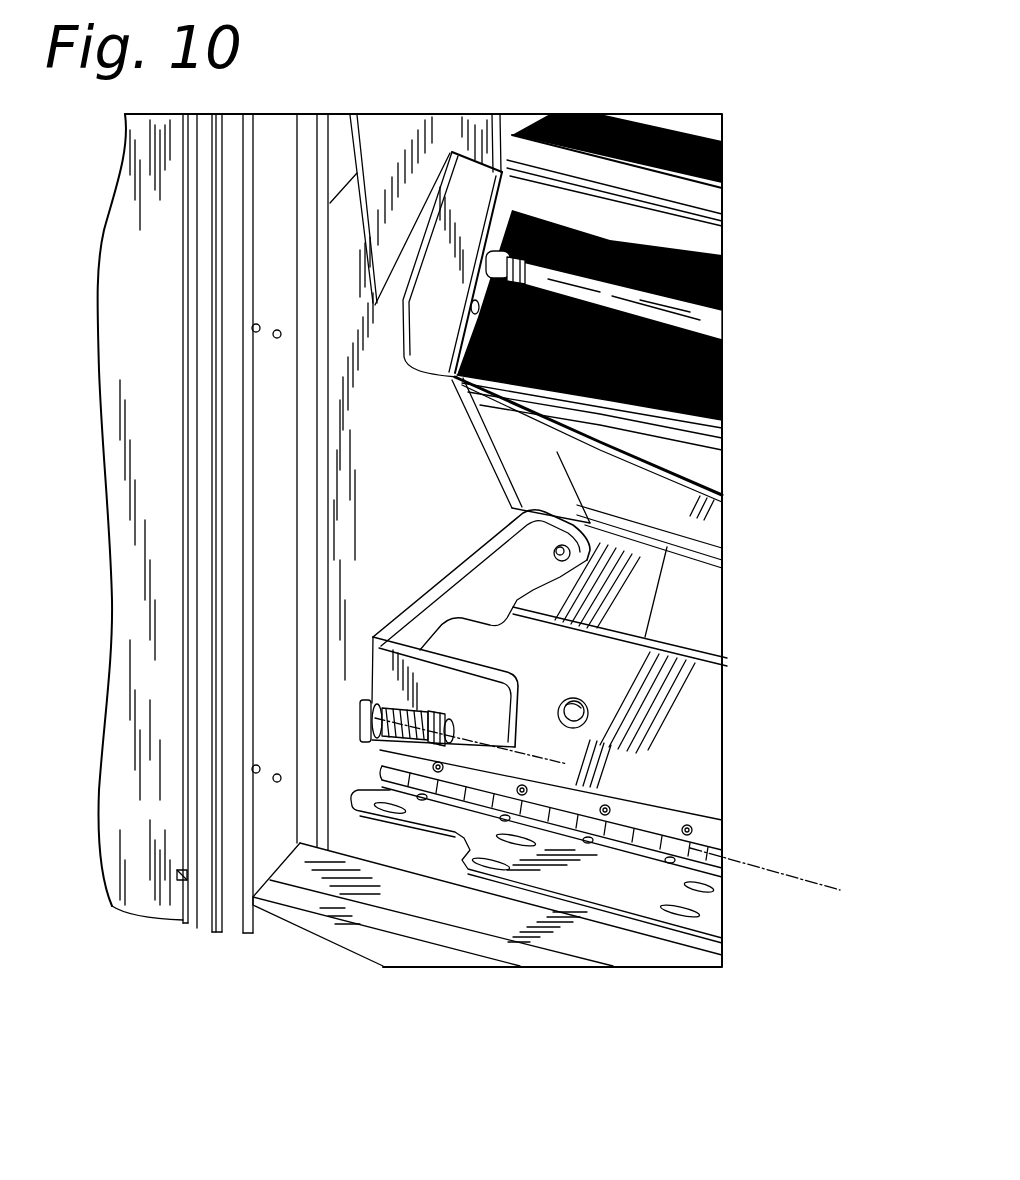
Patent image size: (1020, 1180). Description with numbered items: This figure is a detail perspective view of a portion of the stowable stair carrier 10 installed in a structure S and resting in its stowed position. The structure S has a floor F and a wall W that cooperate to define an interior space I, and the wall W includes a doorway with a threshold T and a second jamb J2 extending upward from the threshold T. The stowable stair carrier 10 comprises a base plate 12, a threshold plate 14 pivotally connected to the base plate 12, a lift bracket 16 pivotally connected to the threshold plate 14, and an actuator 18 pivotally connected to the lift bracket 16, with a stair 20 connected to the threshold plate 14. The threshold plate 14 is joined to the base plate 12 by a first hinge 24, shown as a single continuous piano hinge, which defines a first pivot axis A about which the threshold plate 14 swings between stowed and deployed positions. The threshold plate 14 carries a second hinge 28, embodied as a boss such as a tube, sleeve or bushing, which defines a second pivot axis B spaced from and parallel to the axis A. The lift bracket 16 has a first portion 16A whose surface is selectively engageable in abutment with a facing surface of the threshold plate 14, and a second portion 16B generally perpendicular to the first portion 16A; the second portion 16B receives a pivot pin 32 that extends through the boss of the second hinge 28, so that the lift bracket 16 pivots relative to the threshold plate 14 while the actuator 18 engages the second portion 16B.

The stowable stair carrier 10 is at (778, 427).
The base plate 12 is at (617, 878).
The threshold plate 14 is at (680, 743).
The lift bracket 16 is at (481, 628).
The first portion of the lift bracket 16A is at (500, 715).
The second portion of the lift bracket 16B is at (508, 597).
The actuator 18 is at (490, 450).
The stair 20 is at (722, 279).
The first hinge 24 is at (708, 850).
The second hinge 28 is at (567, 763).
The pivot pin 32 is at (365, 724).
The wall W is at (169, 273).
The second jamb J2 is at (190, 637).
The interior space I is at (394, 473).
The floor F is at (345, 682).
The second pivot axis B is at (528, 750).
The first pivot axis A is at (806, 879).
The structure S is at (264, 994).
The threshold T is at (397, 950).